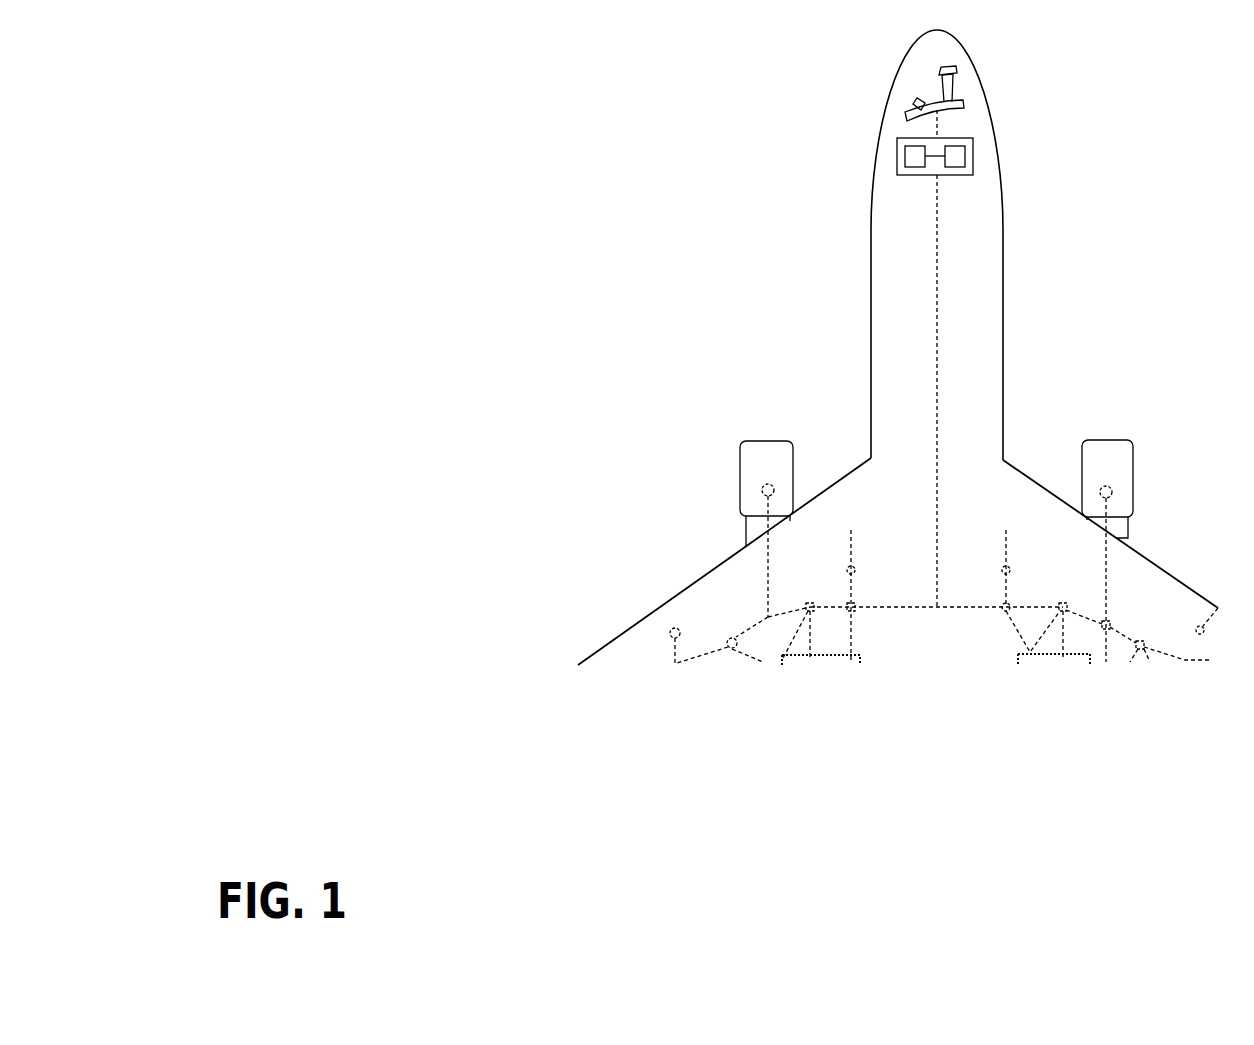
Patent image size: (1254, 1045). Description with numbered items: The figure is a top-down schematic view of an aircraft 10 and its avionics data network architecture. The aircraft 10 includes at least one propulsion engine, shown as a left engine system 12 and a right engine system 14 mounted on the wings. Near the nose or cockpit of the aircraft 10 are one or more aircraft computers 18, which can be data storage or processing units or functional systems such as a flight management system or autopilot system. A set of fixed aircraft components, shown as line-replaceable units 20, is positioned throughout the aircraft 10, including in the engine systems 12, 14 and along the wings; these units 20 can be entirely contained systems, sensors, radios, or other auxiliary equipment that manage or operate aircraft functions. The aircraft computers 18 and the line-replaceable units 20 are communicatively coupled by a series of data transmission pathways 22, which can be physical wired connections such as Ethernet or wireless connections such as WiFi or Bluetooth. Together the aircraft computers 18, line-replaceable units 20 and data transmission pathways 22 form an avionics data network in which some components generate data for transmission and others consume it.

The aircraft 10 is at (783, 58).
The left engine system 12 is at (767, 450).
The right engine system 14 is at (1118, 452).
The aircraft computers 18 is at (908, 168).
The line-replaceable units 20 is at (672, 628).
The data transmission pathways 22 is at (935, 338).